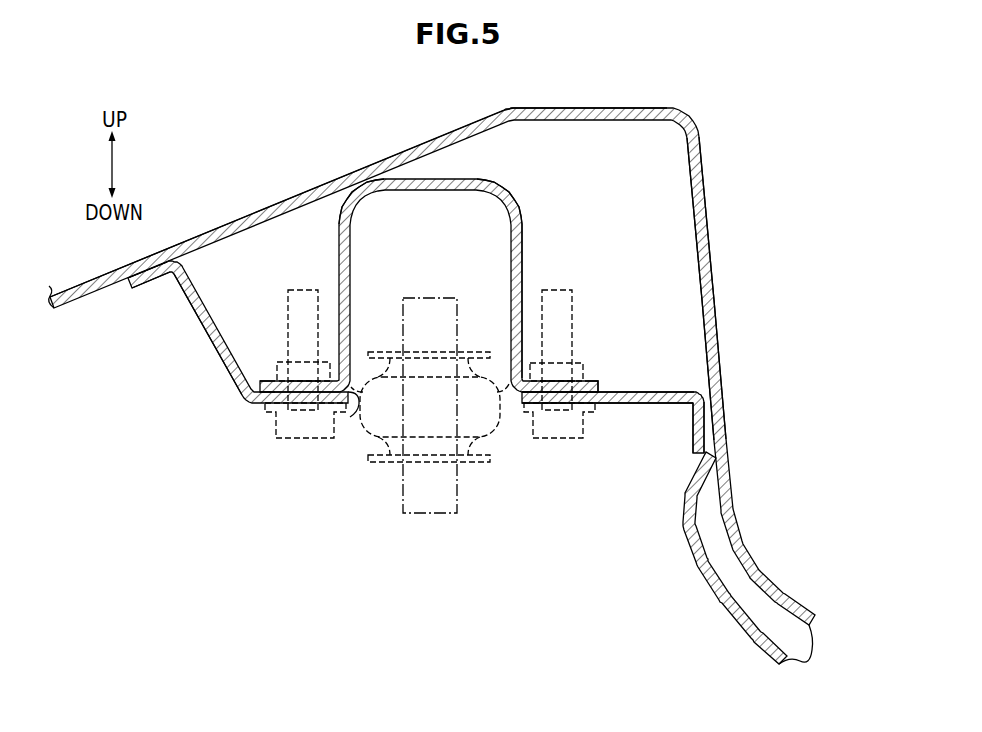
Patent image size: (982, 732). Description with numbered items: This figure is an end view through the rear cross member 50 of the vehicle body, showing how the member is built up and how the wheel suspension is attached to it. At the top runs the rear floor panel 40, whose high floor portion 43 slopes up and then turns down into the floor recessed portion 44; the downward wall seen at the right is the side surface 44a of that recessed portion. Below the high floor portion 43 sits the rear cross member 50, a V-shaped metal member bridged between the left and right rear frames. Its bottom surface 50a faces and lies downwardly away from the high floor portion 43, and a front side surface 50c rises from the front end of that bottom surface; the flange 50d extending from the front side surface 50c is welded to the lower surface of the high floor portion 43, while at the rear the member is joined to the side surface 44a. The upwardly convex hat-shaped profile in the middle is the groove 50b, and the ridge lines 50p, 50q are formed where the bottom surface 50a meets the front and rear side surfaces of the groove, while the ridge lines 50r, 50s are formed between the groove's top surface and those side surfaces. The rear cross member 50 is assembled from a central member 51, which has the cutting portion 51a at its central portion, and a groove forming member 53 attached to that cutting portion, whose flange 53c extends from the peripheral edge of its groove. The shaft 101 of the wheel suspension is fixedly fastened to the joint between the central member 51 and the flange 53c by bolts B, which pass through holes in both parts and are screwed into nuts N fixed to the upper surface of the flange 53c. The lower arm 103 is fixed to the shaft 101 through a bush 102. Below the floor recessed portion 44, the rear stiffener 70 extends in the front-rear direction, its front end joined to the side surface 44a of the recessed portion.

The rear floor panel 40 is at (716, 138).
The high floor portion 43 is at (597, 108).
The floor recessed portion 44 is at (720, 340).
The side surface 44a is at (761, 289).
The rear cross member 50 is at (513, 190).
The central member 51 is at (238, 373).
The groove forming member 53 is at (436, 271).
The bottom surface 50a is at (652, 404).
The groove 50b is at (504, 260).
The front side surface 50c is at (212, 345).
The flange 50d is at (148, 290).
The ridge line 50p is at (328, 378).
The ridge line 50q is at (550, 381).
The ridge line 50r is at (363, 198).
The ridge line 50s is at (497, 198).
The cutting portion 51a is at (352, 418).
The flange 53c is at (265, 381).
The bolt B is at (305, 290).
The nut N is at (298, 362).
The rear stiffener 70 is at (710, 597).
The shaft 101 is at (495, 440).
The bush 102 is at (468, 463).
The lower arm 103 is at (403, 497).